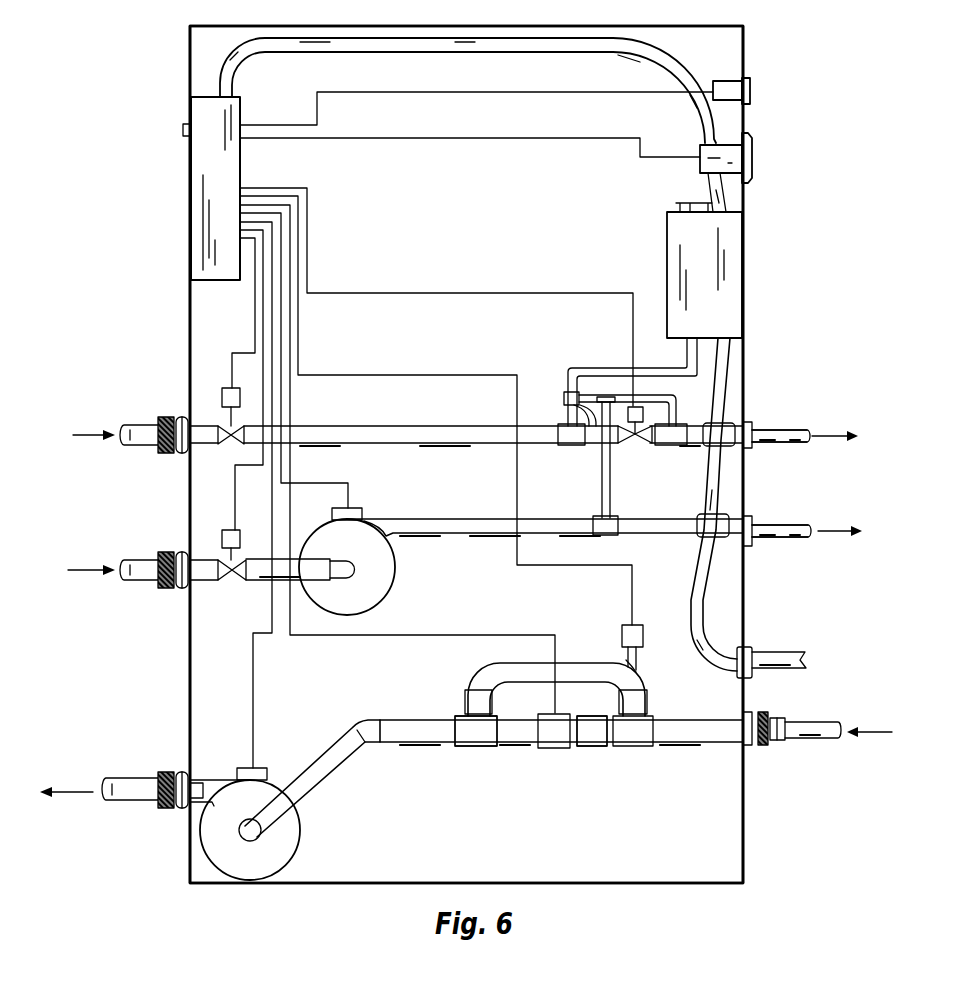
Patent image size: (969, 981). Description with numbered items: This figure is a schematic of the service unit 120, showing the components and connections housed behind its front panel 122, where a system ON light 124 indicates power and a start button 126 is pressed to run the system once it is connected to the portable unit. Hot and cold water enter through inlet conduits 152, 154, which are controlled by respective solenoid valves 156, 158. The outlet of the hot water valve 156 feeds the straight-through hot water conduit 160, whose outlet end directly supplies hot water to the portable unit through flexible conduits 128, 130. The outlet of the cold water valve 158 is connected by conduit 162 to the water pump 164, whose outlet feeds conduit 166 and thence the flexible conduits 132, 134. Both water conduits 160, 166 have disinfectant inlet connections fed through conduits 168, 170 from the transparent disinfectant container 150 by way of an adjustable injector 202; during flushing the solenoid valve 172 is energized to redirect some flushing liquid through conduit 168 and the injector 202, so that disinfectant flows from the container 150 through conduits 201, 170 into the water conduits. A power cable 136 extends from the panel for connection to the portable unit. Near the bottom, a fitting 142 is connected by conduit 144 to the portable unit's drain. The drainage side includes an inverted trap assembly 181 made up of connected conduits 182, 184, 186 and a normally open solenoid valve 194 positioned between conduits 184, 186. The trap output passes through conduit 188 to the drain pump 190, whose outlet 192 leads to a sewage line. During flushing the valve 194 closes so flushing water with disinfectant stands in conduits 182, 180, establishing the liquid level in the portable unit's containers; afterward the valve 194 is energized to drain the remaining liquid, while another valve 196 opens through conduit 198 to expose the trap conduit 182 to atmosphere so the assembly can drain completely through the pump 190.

The service unit 120 is at (772, 337).
The front panel 122 is at (752, 229).
The system ON light 124 is at (750, 88).
The start button 126 is at (752, 160).
The flexible conduit 128 is at (822, 410).
The flexible conduit 130 is at (796, 428).
The flexible conduit 132 is at (825, 513).
The flexible conduit 134 is at (789, 524).
The power cable 136 is at (783, 656).
The fitting 142 is at (761, 748).
The conduit 144 is at (811, 728).
The transparent container 150 is at (692, 238).
The hot water inlet conduit 152 is at (154, 428).
The cold water inlet conduit 154 is at (147, 568).
The hot water solenoid valve 156 is at (229, 397).
The cold water solenoid valve 158 is at (222, 541).
The hot water conduit 160 is at (377, 435).
The conduit 162 is at (273, 566).
The water pump 164 is at (365, 592).
The conduit 166 is at (483, 525).
The conduit 168 is at (566, 412).
The conduit 170 is at (613, 505).
The solenoid valve 172 is at (628, 426).
The conduit 180 is at (707, 735).
The inverted trap assembly 181 is at (515, 795).
The conduit 182 is at (580, 672).
The conduit 184 is at (598, 736).
The conduit 186 is at (516, 733).
The conduit 188 is at (333, 765).
The drain pump 190 is at (272, 860).
The outlet 192 is at (146, 789).
The solenoid valve 194 is at (556, 750).
The valve 196 is at (640, 633).
The conduit 198 is at (644, 665).
The conduit 201 is at (678, 410).
The adjustable injector 202 is at (589, 442).